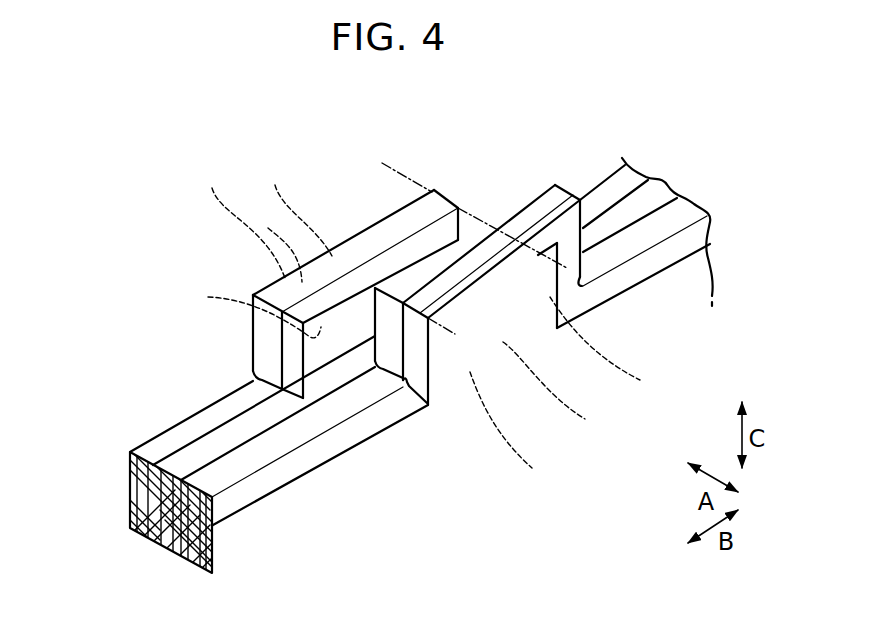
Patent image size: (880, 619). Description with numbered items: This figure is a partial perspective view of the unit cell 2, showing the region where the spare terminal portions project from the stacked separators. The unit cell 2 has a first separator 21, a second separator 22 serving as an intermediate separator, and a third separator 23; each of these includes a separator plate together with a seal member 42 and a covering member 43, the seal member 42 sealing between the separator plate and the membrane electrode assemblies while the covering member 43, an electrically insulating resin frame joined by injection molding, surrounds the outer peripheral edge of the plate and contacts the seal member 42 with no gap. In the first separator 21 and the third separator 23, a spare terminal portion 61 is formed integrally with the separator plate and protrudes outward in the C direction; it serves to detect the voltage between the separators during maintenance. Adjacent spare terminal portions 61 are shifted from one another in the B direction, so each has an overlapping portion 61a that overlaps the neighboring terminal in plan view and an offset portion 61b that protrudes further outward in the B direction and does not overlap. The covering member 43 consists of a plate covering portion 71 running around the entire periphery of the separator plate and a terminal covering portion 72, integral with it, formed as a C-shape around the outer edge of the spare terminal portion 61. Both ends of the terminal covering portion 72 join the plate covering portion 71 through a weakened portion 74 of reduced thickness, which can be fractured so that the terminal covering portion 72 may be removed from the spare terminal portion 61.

The unit cell 2 is at (768, 107).
The first separator 21 is at (714, 203).
The second separator 22 is at (676, 183).
The third separator 23 is at (648, 163).
The seal member 42 is at (697, 282).
The covering member 43 is at (140, 437).
The spare terminal portion 61 is at (394, 361).
The overlapping portion 61a is at (409, 326).
The offset portion 61b is at (433, 283).
The plate covering portion 71 is at (210, 443).
The terminal covering portion 72 is at (280, 293).
The weakened portion 74 is at (403, 387).